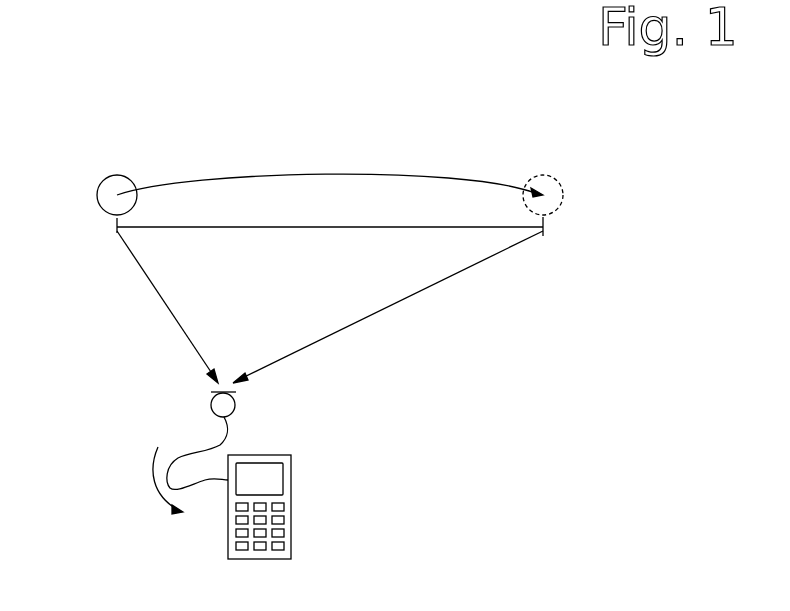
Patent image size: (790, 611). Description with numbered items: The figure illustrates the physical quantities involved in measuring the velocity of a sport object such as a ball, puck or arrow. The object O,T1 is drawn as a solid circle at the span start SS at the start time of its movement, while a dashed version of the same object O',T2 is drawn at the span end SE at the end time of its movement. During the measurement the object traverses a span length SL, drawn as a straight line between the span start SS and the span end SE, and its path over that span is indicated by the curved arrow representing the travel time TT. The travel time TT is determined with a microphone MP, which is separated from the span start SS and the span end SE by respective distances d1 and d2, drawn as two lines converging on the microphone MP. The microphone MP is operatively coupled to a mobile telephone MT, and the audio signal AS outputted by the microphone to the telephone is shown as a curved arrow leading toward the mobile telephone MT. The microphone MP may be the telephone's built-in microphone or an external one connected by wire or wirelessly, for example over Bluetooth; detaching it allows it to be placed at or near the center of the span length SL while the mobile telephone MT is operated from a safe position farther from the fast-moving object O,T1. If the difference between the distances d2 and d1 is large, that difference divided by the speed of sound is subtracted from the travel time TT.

The sport object at start time O,T1 is at (102, 178).
The sport object at end time O',T2 is at (574, 179).
The travel time TT is at (330, 172).
The span length SL is at (292, 230).
The span start SS is at (116, 232).
The span end SE is at (545, 233).
The distance from microphone to span start d1 is at (160, 298).
The distance from microphone to span end d2 is at (428, 292).
The microphone MP is at (236, 401).
The audio signal AS is at (174, 465).
The mobile telephone MT is at (291, 512).